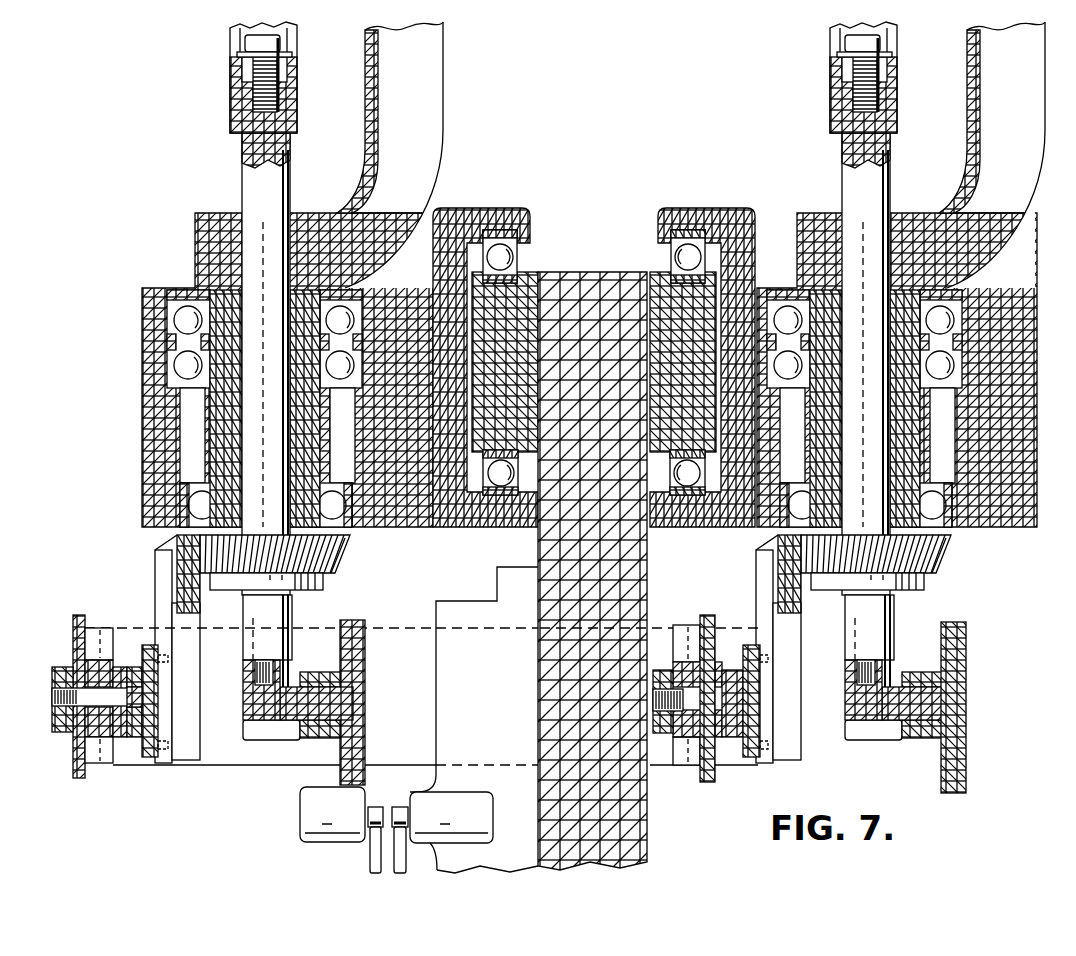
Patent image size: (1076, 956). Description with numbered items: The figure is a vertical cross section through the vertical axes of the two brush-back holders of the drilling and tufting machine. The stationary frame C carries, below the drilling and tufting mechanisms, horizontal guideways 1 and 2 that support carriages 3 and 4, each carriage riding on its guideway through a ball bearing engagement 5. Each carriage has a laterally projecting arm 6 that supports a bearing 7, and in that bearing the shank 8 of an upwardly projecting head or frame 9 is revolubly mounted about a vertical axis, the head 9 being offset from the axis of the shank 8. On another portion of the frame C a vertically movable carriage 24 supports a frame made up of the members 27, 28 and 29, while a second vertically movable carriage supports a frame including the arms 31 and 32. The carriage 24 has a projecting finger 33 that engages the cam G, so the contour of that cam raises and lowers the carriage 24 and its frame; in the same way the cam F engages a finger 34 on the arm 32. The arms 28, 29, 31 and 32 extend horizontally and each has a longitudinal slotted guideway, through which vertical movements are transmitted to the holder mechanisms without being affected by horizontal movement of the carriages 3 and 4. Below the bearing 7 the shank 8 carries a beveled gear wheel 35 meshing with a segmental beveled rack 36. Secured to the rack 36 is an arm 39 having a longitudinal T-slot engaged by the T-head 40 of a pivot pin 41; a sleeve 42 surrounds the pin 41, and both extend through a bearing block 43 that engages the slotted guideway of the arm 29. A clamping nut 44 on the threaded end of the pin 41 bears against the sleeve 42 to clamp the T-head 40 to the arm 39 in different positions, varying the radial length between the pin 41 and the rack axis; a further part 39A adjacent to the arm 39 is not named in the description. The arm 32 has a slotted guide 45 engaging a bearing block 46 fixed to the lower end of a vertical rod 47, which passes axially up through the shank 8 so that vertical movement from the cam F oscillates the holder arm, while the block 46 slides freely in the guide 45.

The horizontal guideway 1 is at (518, 310).
The horizontal guideway 2 is at (675, 350).
The carriage 3 is at (462, 227).
The carriage 4 is at (713, 230).
The ball bearing engagement 5 is at (500, 246).
The laterally projecting arm 6 is at (408, 327).
The bearing 7 is at (186, 322).
The shank 8 is at (227, 420).
The head or frame 9 is at (430, 113).
The carriage 24 is at (465, 617).
The frame member 27 is at (368, 645).
The arm 28 is at (712, 625).
The arm 29 is at (78, 636).
The arm 31 is at (958, 662).
The arm 32 is at (351, 667).
The projecting finger 33 is at (403, 812).
The projecting finger 34 is at (378, 820).
The beveled gear wheel 35 is at (330, 550).
The segmental beveled rack 36 is at (165, 578).
The arm 39 is at (133, 737).
The ring 39A is at (128, 667).
The T-head 40 is at (143, 692).
The pivot pin 41 is at (82, 703).
The sleeve 42 is at (112, 724).
The bearing block 43 is at (96, 672).
The clamping nut 44 is at (53, 673).
The slotted guide 45 is at (354, 693).
The bearing block 46 is at (313, 703).
The rod 47 is at (272, 613).
The frame C is at (627, 825).
The cam F is at (372, 849).
The cam G is at (404, 858).